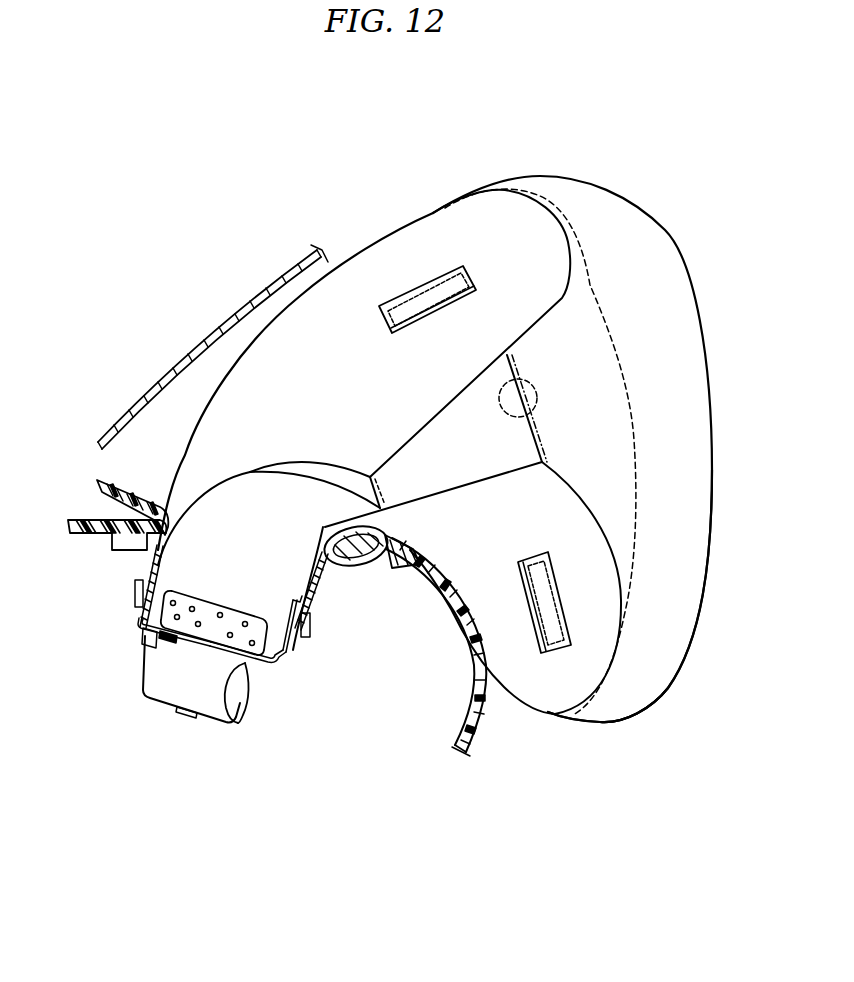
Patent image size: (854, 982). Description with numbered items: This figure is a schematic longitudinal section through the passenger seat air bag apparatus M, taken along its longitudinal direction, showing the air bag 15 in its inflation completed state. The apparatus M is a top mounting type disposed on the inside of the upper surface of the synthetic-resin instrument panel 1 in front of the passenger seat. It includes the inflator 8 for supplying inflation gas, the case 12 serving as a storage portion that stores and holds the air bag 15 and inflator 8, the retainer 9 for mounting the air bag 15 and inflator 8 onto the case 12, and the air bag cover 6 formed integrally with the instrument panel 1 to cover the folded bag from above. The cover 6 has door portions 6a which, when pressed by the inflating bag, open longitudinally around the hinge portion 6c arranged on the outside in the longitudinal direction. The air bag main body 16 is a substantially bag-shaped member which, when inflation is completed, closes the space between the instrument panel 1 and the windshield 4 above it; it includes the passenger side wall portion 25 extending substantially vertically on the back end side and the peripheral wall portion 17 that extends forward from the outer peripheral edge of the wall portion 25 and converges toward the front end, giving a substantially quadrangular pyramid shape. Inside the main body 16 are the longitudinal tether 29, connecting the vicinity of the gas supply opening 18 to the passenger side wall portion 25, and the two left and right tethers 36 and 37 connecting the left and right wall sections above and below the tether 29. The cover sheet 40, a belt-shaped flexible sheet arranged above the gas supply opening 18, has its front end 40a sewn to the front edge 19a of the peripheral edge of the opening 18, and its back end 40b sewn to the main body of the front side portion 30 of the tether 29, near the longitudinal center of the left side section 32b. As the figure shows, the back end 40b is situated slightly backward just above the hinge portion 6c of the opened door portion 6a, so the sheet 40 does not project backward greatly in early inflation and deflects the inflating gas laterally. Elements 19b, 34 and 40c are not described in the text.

The instrument panel 1 is at (485, 737).
The windshield 4 is at (207, 343).
The air bag cover 6 is at (138, 565).
The door portion 6a is at (125, 503).
The hinge portion 6c is at (322, 575).
The inflator 8 is at (170, 722).
The retainer 9 is at (160, 596).
The case 12 is at (296, 670).
The air bag 15 is at (621, 742).
The air bag main body 16 is at (634, 705).
The peripheral wall portion 17 is at (292, 300).
The gas supply opening 18 is at (243, 672).
The front edge 19a is at (148, 638).
The mounting flange 19b is at (270, 675).
The passenger side wall portion 25 is at (655, 205).
The longitudinal tether 29 is at (478, 498).
The front side portion 30 is at (452, 383).
The left side section 32b is at (433, 480).
The outer panel 34 is at (537, 307).
The left and right tether 36 is at (428, 272).
The left and right tether 37 is at (558, 660).
The cover sheet 40 is at (231, 539).
The front end 40a is at (140, 625).
The back end 40b is at (370, 477).
The case rim 40c is at (250, 470).
The passenger air bag apparatus M is at (199, 684).